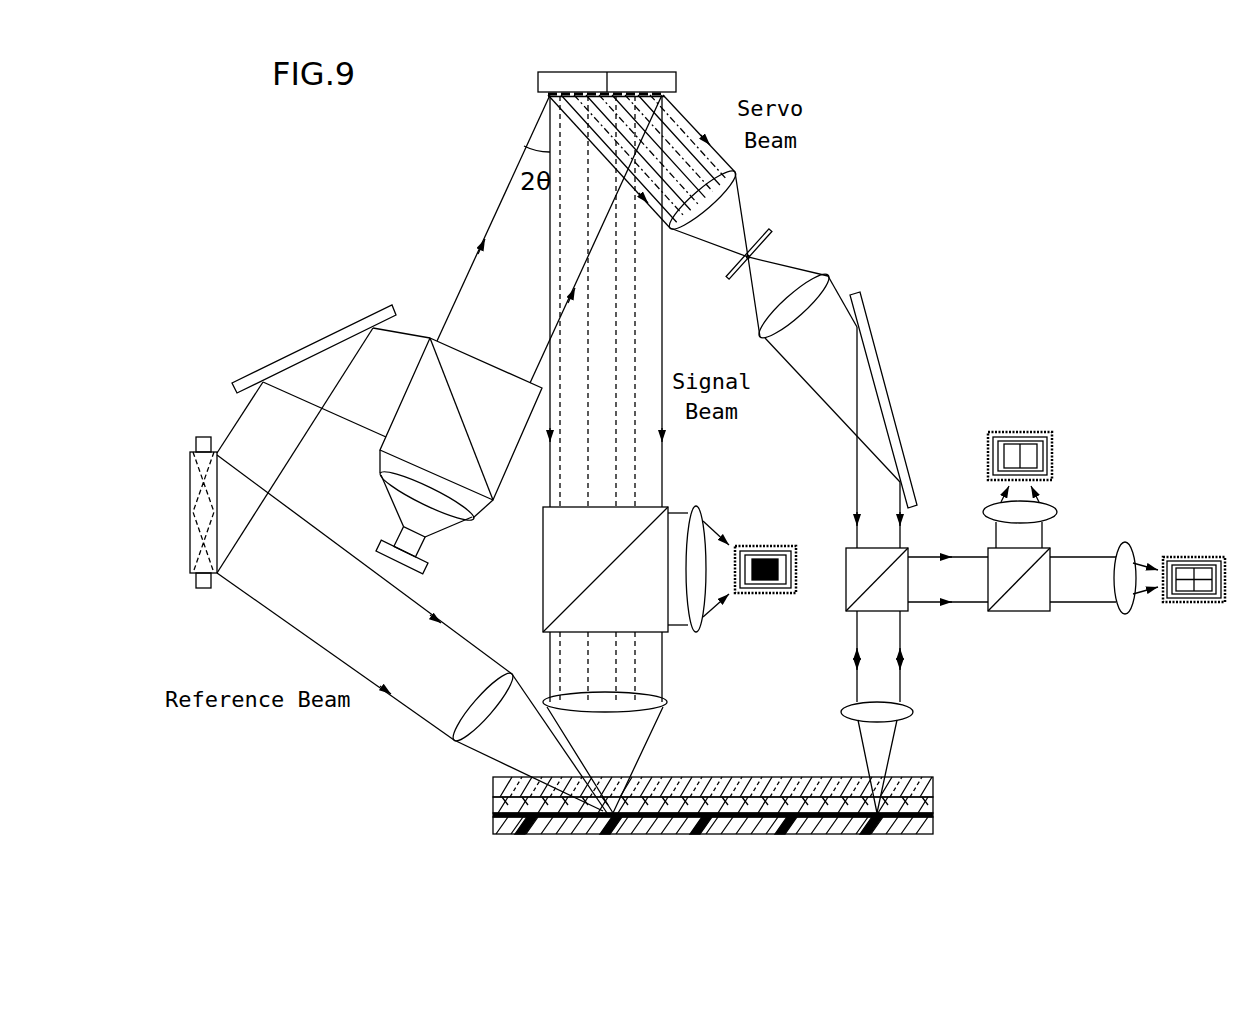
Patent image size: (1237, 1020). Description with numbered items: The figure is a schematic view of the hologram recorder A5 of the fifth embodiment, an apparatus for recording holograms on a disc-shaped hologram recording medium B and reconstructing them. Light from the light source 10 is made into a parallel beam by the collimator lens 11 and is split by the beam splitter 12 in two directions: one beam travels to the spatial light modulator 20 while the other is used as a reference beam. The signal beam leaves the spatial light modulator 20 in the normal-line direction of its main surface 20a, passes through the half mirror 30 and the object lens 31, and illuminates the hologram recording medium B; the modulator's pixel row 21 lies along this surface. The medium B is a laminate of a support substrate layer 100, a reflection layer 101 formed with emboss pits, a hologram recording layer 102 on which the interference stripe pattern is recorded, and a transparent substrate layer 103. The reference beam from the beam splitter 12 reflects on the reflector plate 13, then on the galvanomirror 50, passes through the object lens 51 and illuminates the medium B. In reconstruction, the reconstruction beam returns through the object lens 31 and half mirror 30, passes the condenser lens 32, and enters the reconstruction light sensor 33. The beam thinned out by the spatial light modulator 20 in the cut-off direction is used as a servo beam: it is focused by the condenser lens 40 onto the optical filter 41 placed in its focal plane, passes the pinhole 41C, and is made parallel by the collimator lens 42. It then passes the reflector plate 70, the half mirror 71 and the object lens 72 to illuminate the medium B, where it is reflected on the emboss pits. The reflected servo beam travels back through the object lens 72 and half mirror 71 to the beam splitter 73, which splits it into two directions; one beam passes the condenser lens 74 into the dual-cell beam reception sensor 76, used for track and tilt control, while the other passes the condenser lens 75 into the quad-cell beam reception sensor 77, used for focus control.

The light source 10 is at (377, 544).
The collimator lens 11 is at (381, 474).
The beam splitter 12 is at (446, 355).
The reflector plate 13 is at (290, 360).
The spatial light modulator 20 is at (572, 72).
The main surface 20a is at (678, 91).
The pixel array of spatial light modulator 21 is at (595, 95).
The half mirror 30 is at (543, 560).
The object lens 31 is at (667, 702).
The condenser lens 32 is at (698, 516).
The reconstruction light sensor 33 is at (770, 546).
The condenser lens 40 is at (737, 172).
The optical filter 41 is at (771, 231).
The pinhole 41C is at (755, 258).
The collimator lens 42 is at (829, 276).
The galvanomirror 50 is at (196, 440).
The object lens 51 is at (455, 740).
The reflector plate 70 is at (883, 352).
The half mirror 71 is at (848, 556).
The object lens 72 is at (912, 712).
The beam splitter 73 is at (1020, 612).
The condenser lens 74 is at (1057, 512).
The condenser lens 75 is at (1125, 613).
The dual-cell beam reception sensor 76 is at (1052, 434).
The quad-cell beam reception sensor 77 is at (1215, 557).
The support substrate layer 100 is at (933, 830).
The reflection layer 101 is at (933, 815).
The hologram recording layer 102 is at (933, 805).
The transparent substrate layer 103 is at (933, 780).
The hologram recording medium B is at (722, 810).
The hologram recorder A5 is at (953, 204).